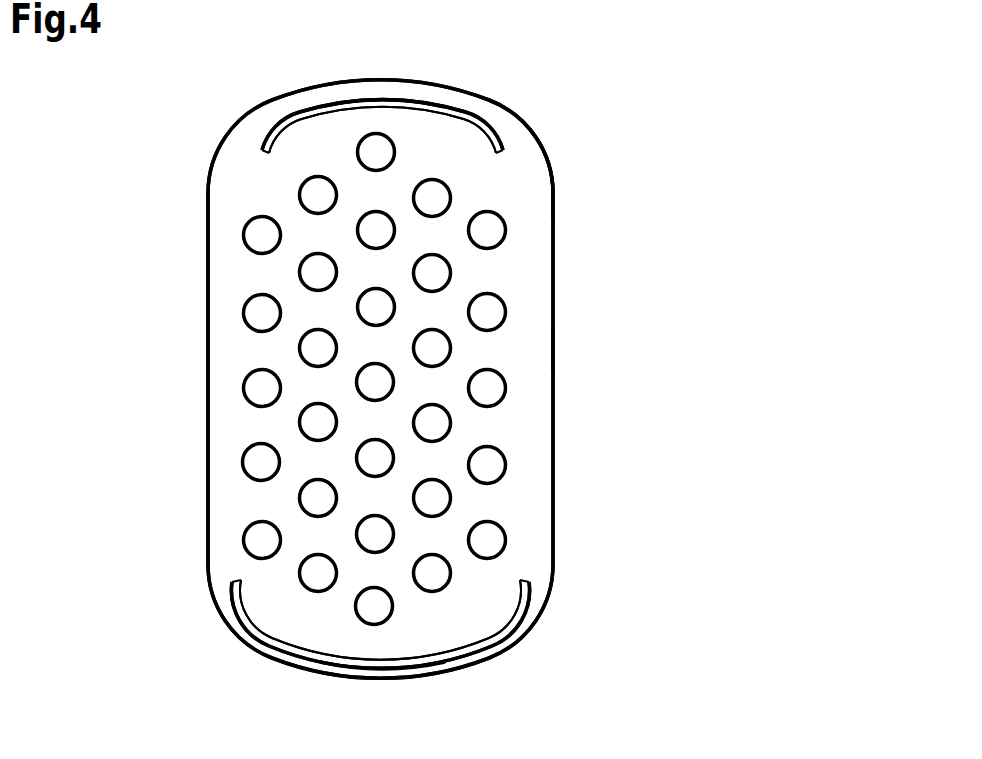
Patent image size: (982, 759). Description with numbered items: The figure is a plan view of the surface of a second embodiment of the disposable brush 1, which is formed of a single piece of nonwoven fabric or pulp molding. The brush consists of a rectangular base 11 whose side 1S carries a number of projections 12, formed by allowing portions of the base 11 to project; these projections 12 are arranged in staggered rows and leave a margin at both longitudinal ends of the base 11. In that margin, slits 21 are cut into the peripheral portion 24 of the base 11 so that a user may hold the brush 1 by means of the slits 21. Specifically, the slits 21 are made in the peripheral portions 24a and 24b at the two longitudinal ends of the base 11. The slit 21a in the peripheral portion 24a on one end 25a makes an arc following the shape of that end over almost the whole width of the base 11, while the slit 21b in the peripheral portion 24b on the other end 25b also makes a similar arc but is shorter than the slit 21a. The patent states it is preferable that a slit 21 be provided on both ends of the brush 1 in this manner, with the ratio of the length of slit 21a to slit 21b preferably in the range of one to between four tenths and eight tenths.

The disposable brush 1 is at (592, 97).
The base 11 is at (530, 444).
The side 1S is at (525, 351).
The projections 12 is at (372, 450).
The peripheral portion 24 is at (530, 184).
The peripheral portion 24a is at (318, 632).
The peripheral portion 24b is at (318, 132).
The slits 21 is at (380, 383).
The slit 21a is at (467, 643).
The slit 21b is at (470, 108).
The end 25a is at (397, 667).
The end 25b is at (372, 92).